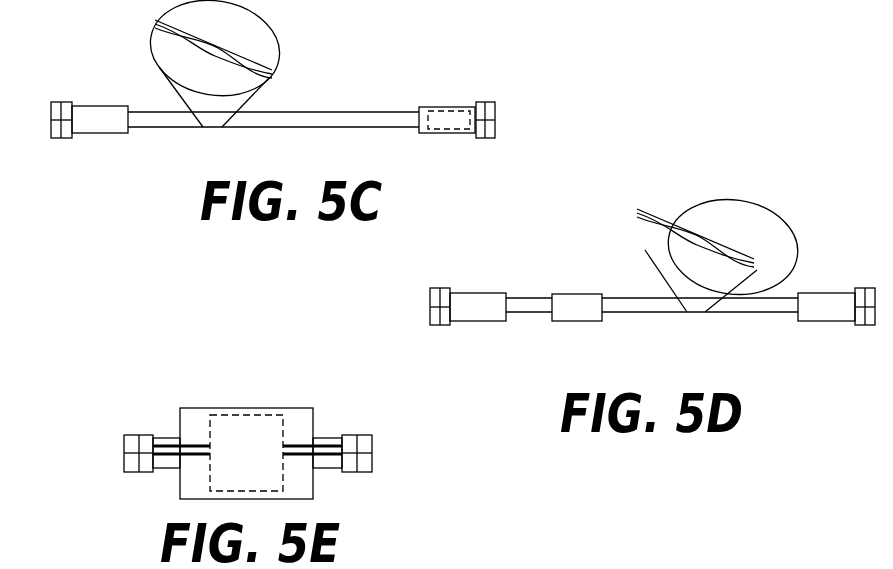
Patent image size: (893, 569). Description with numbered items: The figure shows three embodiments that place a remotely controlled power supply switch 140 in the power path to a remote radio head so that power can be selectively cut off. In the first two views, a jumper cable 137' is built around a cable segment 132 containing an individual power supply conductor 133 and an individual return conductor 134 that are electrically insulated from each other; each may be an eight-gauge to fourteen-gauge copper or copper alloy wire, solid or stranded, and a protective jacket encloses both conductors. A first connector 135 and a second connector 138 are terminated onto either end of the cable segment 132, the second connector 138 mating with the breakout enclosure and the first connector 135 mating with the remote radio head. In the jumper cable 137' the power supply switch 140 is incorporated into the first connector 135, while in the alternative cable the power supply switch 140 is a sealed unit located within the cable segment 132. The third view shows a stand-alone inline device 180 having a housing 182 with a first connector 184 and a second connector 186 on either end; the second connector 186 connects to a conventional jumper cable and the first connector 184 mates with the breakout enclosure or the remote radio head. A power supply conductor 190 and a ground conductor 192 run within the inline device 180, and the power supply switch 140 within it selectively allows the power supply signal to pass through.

In FIG. 5C, the cable segment 132 is at (257, 128).
In FIG. 5D, the cable segment 132 is at (635, 313).
In FIG. 5C, the power supply conductor 133 is at (170, 31).
In FIG. 5D, the power supply conductor 133 is at (657, 222).
In FIG. 5C, the return conductor 134 is at (200, 31).
In FIG. 5D, the return conductor 134 is at (686, 222).
In FIG. 5C, the first connector 135 is at (440, 107).
In FIG. 5D, the first connector 135 is at (820, 293).
In FIG. 5C, the jumper cable 137' is at (268, 63).
In FIG. 5C, the second connector 138 is at (87, 105).
In FIG. 5D, the second connector 138 is at (463, 293).
In FIG. 5C, the power supply switch 140 is at (448, 130).
In FIG. 5D, the power supply switch 140 is at (575, 322).
In FIG. 5E, the power supply switch 140 is at (246, 453).
In FIG. 5E, the inline device 180 is at (315, 383).
In FIG. 5E, the housing 182 is at (252, 408).
In FIG. 5E, the first connector 184 is at (132, 435).
In FIG. 5E, the second connector 186 is at (355, 472).
In FIG. 5E, the power supply conductor 190 is at (167, 446).
In FIG. 5E, the ground conductor 192 is at (172, 458).